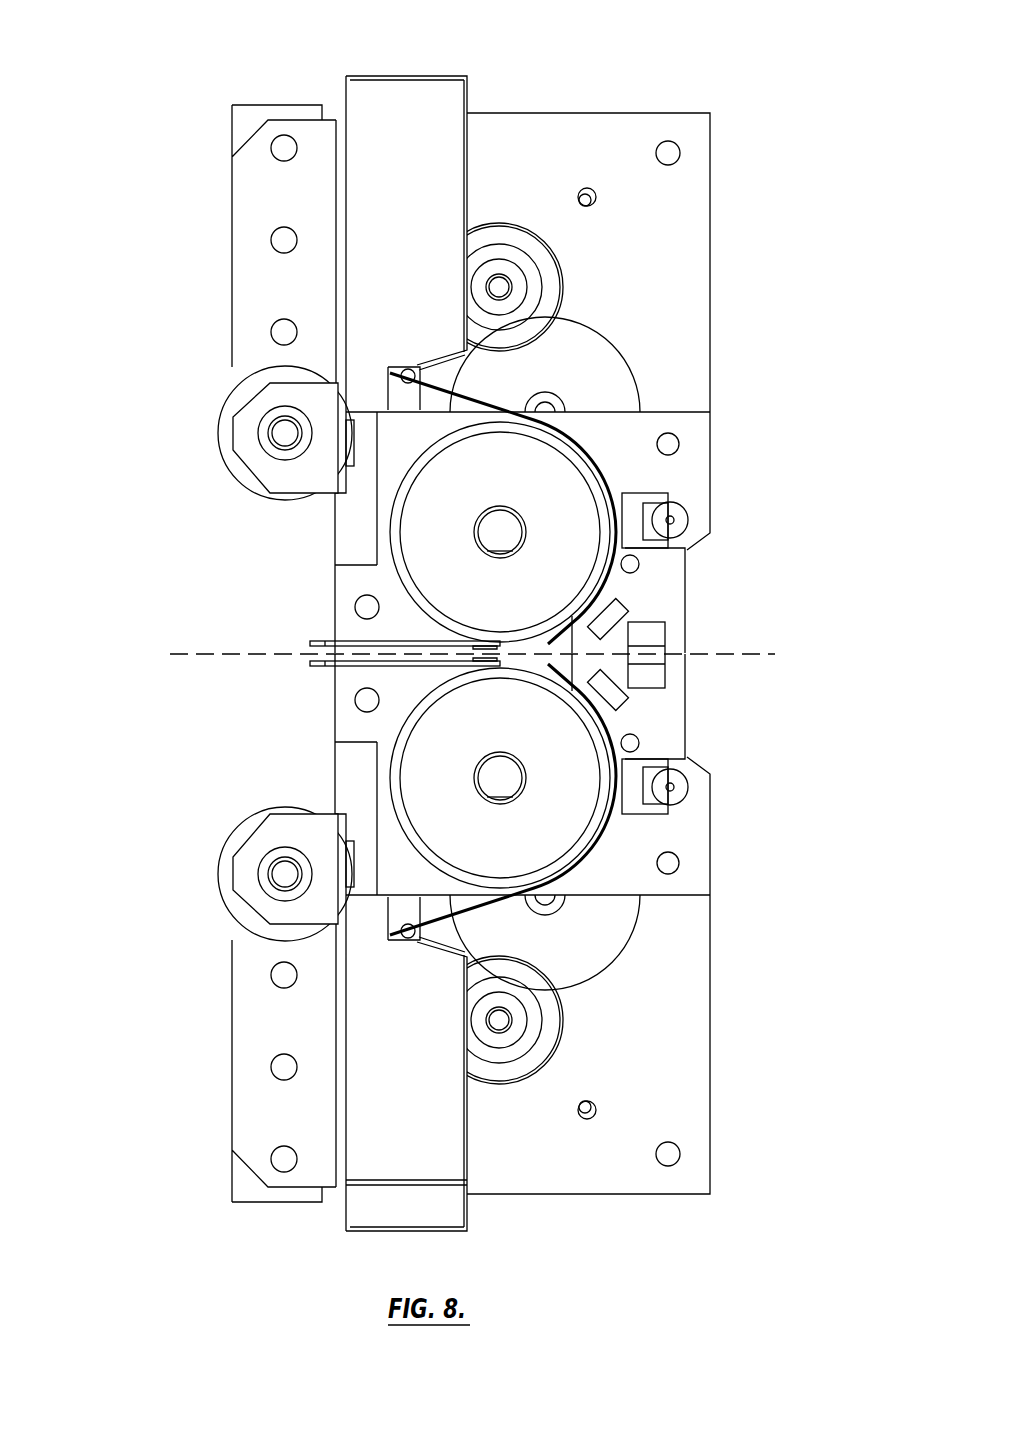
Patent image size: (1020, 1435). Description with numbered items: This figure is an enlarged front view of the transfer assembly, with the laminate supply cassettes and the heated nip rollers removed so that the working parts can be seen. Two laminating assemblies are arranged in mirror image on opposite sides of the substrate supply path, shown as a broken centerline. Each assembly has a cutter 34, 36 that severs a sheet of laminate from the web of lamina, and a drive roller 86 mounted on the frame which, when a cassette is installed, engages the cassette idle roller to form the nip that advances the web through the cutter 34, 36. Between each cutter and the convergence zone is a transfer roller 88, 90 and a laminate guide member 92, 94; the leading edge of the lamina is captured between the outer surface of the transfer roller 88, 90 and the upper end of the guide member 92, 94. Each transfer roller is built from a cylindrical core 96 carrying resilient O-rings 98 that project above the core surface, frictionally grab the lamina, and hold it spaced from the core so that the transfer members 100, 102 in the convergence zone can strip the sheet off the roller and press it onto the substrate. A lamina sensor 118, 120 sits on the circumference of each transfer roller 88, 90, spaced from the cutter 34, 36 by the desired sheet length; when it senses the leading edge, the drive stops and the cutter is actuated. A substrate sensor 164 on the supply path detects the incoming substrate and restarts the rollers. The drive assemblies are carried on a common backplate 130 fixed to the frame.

The cutter 34 is at (425, 108).
The cutter 36 is at (437, 1155).
The drive roller 86 is at (242, 402).
The transfer roller 88 is at (422, 534).
The transfer roller 90 is at (422, 780).
The laminate guide member 92 is at (590, 440).
The laminate guide member 94 is at (580, 866).
The cylindrical core 96 is at (565, 810).
The resilient O-rings 98 is at (612, 742).
The transfer member 100 is at (345, 638).
The transfer member 102 is at (350, 670).
The lamina sensor 118 is at (620, 602).
The lamina sensor 120 is at (625, 708).
The common backplate 130 is at (680, 258).
The substrate sensor 164 is at (653, 638).